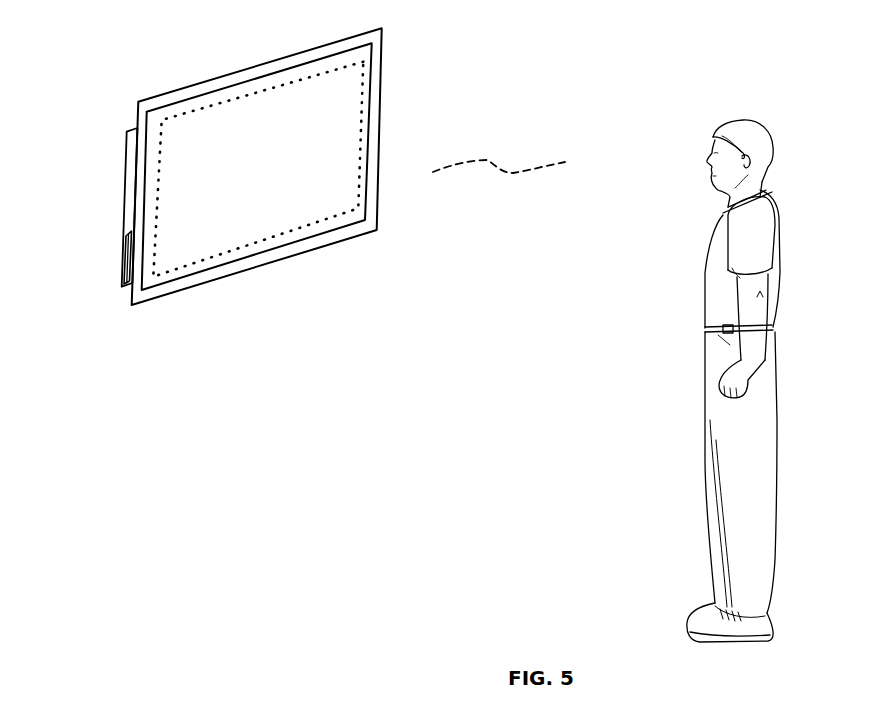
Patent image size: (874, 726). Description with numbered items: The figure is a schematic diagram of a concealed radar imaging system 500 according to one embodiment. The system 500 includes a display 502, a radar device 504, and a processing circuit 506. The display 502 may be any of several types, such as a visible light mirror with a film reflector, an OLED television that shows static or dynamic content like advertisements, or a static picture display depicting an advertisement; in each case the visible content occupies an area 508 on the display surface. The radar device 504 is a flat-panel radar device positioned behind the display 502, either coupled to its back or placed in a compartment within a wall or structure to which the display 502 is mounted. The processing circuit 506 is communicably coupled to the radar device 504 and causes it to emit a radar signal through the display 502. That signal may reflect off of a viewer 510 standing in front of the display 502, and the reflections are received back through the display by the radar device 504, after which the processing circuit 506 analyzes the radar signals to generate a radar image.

The concealed radar imaging system 500 is at (52, 60).
The display 502 is at (382, 70).
The radar device 504 is at (127, 170).
The processing circuit 506 is at (127, 265).
The area 508 is at (243, 226).
The viewer 510 is at (773, 147).